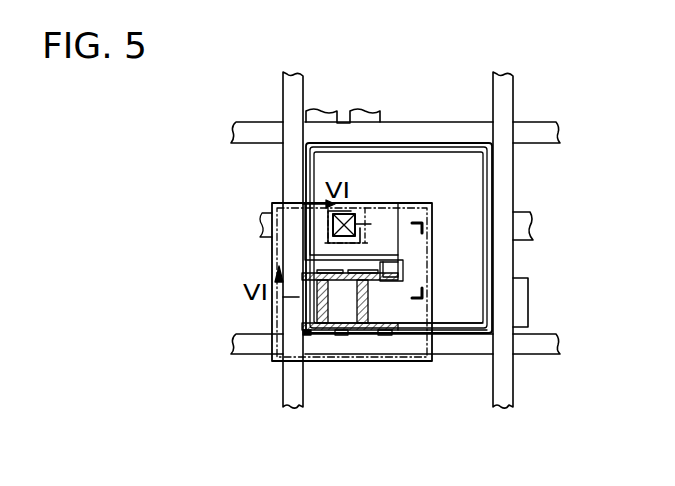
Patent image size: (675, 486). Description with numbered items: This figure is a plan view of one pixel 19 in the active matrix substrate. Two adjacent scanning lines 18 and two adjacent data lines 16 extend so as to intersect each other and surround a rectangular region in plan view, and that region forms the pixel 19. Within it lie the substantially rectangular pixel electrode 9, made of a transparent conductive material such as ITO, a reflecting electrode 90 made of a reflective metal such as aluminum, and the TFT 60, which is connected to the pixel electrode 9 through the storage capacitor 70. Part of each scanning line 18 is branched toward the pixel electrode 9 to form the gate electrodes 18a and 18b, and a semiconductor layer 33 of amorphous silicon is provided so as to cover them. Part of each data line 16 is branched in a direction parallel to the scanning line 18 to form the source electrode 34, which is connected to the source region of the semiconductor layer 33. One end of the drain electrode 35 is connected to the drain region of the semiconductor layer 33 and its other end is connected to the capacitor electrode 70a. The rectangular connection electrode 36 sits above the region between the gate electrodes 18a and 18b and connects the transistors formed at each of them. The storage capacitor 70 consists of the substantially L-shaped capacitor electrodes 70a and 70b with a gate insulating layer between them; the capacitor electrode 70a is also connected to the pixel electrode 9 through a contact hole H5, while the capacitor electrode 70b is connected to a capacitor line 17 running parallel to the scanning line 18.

The pixel 19 is at (337, 91).
The storage capacitor 70 is at (398, 183).
The capacitor electrode 70a is at (472, 73).
The capacitor electrode 70b is at (453, 152).
The data line 16 is at (288, 97).
The scanning line 18 is at (250, 144).
The gate electrode 18a is at (322, 333).
The gate electrode 18b is at (372, 333).
The capacitor line 17 is at (522, 213).
The pixel electrode 9 is at (272, 255).
The reflecting electrode 90 is at (277, 250).
The semiconductor layer 33 is at (317, 271).
The source electrode 34 is at (308, 313).
The drain electrode 35 is at (392, 333).
The connection electrode 36 is at (343, 331).
The TFT 60 is at (327, 394).
The contact hole H5 is at (333, 222).